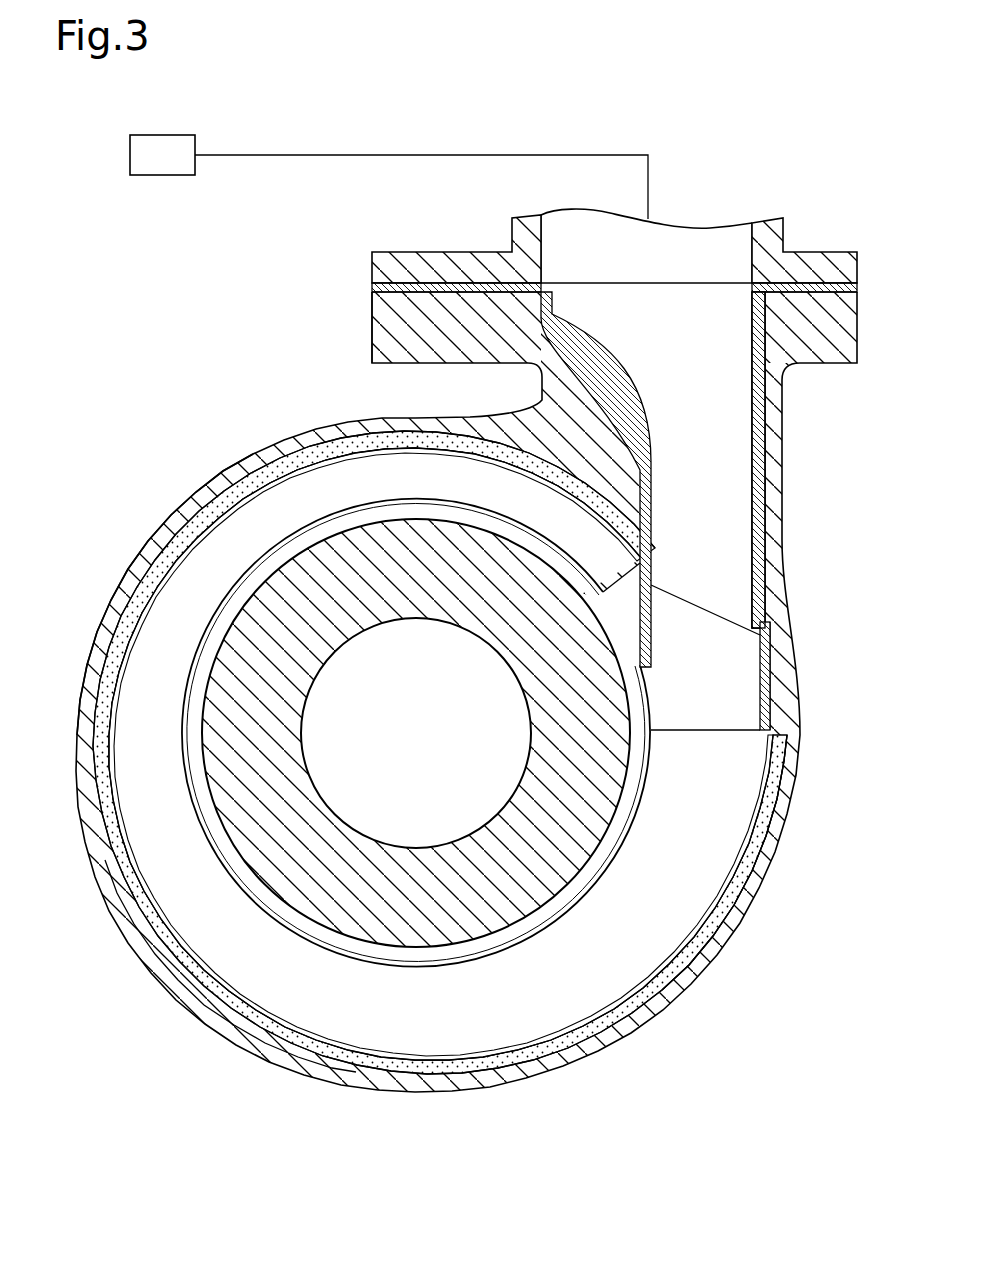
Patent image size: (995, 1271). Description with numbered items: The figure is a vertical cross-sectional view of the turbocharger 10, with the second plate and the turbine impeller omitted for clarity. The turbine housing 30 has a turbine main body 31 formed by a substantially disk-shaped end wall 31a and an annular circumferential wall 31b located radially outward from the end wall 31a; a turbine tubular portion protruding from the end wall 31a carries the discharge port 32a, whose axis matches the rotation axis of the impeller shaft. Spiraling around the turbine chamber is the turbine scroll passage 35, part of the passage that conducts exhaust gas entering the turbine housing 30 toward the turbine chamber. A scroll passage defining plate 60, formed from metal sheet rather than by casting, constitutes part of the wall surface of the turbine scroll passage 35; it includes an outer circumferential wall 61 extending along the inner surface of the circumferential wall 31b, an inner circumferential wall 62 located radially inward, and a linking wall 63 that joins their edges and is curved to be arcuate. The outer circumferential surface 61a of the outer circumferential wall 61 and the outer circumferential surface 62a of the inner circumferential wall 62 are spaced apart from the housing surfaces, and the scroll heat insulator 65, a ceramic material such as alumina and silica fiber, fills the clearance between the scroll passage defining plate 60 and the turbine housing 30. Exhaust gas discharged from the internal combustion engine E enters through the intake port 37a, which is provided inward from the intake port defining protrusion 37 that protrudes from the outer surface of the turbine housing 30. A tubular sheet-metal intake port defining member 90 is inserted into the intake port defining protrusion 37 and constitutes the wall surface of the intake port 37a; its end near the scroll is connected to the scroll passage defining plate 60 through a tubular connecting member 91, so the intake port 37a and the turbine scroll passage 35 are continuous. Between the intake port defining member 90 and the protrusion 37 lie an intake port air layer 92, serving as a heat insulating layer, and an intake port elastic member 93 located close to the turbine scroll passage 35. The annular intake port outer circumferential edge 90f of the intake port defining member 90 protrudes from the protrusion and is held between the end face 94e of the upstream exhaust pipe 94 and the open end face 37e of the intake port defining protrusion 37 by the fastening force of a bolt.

The turbocharger 10 is at (127, 385).
The turbine housing 30 is at (256, 456).
The turbine main body 31 is at (293, 750).
The end wall 31a is at (430, 940).
The circumferential wall 31b is at (232, 487).
The discharge port 32a is at (410, 650).
The turbine scroll passage 35 is at (705, 783).
The intake port defining protrusion 37 is at (776, 445).
The intake port 37a is at (707, 470).
The open end face 37e is at (378, 283).
The scroll passage defining plate 60 is at (110, 626).
The outer circumferential wall 61 is at (167, 541).
The outer circumferential surface 61a is at (141, 566).
The inner circumferential wall 62 is at (182, 741).
The outer circumferential surface 62a is at (205, 825).
The linking wall 63 is at (135, 693).
The scroll heat insulator 65 is at (332, 438).
The intake port defining member 90 is at (764, 517).
The intake port outer circumferential edge 90f is at (405, 295).
The connecting member 91 is at (767, 684).
The intake port air layer 92 is at (764, 408).
The intake port elastic member 93 is at (777, 545).
The upstream exhaust pipe 94 is at (836, 256).
The end face 94e is at (484, 290).
The internal combustion engine E is at (164, 177).